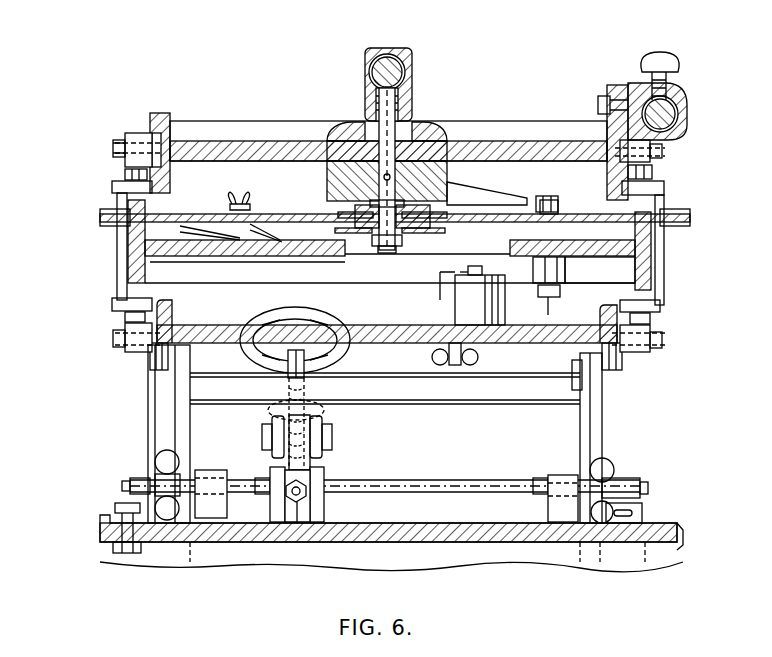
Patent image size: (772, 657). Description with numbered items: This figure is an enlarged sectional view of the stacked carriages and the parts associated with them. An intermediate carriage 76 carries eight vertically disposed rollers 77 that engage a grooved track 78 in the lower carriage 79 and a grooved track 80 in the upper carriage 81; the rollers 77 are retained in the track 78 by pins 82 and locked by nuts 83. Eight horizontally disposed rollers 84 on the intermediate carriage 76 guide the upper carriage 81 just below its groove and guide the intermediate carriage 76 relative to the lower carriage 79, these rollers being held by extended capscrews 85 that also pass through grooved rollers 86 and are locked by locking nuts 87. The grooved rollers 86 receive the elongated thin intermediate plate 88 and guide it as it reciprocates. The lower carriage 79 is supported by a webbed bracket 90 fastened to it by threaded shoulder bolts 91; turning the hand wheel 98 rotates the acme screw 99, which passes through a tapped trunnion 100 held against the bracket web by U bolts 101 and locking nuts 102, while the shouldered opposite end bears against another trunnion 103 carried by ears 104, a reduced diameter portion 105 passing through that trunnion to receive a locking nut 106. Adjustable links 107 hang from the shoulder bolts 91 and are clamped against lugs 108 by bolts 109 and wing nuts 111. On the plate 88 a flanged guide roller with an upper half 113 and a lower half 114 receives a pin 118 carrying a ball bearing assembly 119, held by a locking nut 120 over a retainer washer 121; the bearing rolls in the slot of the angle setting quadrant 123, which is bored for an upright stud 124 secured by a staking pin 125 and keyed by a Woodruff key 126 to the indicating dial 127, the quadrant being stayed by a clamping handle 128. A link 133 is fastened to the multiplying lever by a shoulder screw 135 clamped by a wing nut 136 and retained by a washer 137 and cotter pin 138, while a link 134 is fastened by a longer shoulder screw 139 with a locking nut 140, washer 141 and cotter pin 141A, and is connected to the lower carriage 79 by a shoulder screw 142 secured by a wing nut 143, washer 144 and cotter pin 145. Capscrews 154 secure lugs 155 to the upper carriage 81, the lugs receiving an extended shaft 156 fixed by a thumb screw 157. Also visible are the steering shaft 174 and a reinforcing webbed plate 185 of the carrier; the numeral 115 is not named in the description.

The intermediate carriage 76 is at (118, 276).
The rollers 77 is at (150, 135).
The grooved track 78 is at (172, 330).
The lower carriage 79 is at (392, 343).
The grooved track 80 is at (170, 125).
The upper carriage 81 is at (532, 140).
The pins 82 is at (113, 148).
The nuts 83 is at (122, 140).
The rollers 84 is at (118, 190).
The extended capscrews 85 is at (125, 176).
The grooved rollers 86 is at (108, 219).
The locking nuts 87 is at (652, 322).
The intermediate plate 88 is at (203, 218).
The webbed supporting bracket 90 is at (602, 438).
The threaded shoulder bolts 91 is at (580, 385).
The hand wheel 98 is at (306, 316).
The acme screw 99 is at (318, 358).
The tapped trunnion 100 is at (322, 437).
The U bolts 101 is at (272, 437).
The locking nuts 102 is at (268, 410).
The trunnion 103 is at (324, 498).
The ears 104 is at (270, 498).
The reduced diameter portion 105 is at (298, 520).
The locking nut 106 is at (306, 486).
The adjustable links 107 is at (580, 434).
The lugs 108 is at (566, 476).
The bolts 109 is at (258, 478).
The wing nuts 111 is at (160, 464).
The upper half 113 is at (345, 212).
The lower half 114 is at (328, 252).
The block 115 is at (404, 250).
The pin 118 is at (447, 190).
The ball bearing assembly 119 is at (345, 198).
The locking nut 120 is at (387, 255).
The retainer washer 121 is at (368, 248).
The angle setting quadrant 123 is at (328, 165).
The upright stud 124 is at (398, 88).
The staking pin 125 is at (445, 162).
The Woodruff key 126 is at (400, 120).
The indicating dial 127 is at (350, 128).
The clamping handle 128 is at (395, 50).
The link 133 is at (272, 248).
The link 134 is at (494, 288).
The shoulder screw 135 is at (226, 248).
The wing nut 136 is at (240, 204).
The washer 137 is at (132, 242).
The cotter pin 138 is at (236, 270).
The shoulder screw 139 is at (565, 270).
The locking nut 140 is at (558, 206).
The washer 141 is at (556, 294).
The cotter pin 141A is at (556, 314).
The shoulder screw 142 is at (498, 305).
The wing nut 143 is at (458, 365).
The washer 144 is at (455, 298).
The cotter pin 145 is at (482, 270).
The capscrews 154 is at (598, 104).
The lugs 155 is at (688, 103).
The extended shaft 156 is at (687, 122).
The thumb screw 157 is at (664, 52).
The shaft 174 is at (620, 550).
The webbed plates 185 is at (434, 566).